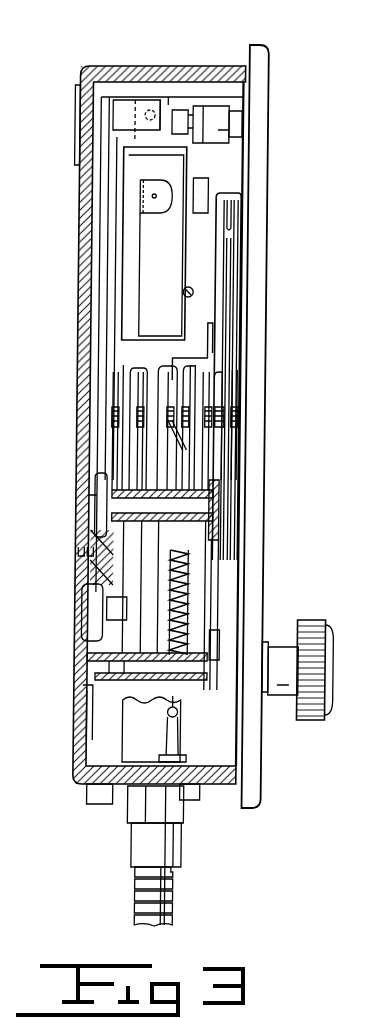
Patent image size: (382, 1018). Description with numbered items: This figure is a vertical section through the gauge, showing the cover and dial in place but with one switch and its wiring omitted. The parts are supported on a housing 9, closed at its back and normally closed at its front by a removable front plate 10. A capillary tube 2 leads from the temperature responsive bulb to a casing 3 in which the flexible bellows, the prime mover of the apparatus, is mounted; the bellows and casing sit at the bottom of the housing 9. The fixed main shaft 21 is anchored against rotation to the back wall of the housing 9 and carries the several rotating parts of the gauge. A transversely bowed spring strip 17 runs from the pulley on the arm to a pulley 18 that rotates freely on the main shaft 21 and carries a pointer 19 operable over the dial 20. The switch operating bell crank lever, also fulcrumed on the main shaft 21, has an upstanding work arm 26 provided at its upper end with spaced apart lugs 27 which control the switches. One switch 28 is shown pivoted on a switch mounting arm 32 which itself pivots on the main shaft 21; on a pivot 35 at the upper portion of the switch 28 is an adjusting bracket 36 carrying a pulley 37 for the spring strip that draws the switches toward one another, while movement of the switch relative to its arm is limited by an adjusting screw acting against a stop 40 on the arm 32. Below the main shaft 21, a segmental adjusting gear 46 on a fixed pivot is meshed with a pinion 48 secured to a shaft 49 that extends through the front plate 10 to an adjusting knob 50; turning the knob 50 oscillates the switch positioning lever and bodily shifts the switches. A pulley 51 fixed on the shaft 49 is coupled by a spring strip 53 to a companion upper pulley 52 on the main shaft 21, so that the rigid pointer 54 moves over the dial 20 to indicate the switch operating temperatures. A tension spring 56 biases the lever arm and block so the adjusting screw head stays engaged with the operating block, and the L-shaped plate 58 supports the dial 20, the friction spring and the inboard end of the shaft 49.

The capillary tube 2 is at (181, 884).
The casing 3 is at (151, 729).
The housing 9 is at (77, 225).
The front plate 10 is at (265, 72).
The spring strip 17 is at (207, 463).
The pulley 18 is at (220, 377).
The pointer 19 is at (236, 305).
The dial 20 is at (227, 224).
The main shaft 21 is at (98, 437).
The work arm 26 is at (158, 296).
The lugs 27 is at (147, 215).
The switch 28 is at (190, 285).
The switch mounting arm 32 is at (100, 250).
The pivot 35 is at (206, 178).
The adjusting bracket 36 is at (171, 97).
The pulley 37 is at (200, 104).
The stop 40 is at (122, 103).
The segmental adjusting gear 46 is at (108, 633).
The pinion 48 is at (110, 675).
The shaft 49 is at (244, 658).
The adjusting knob 50 is at (330, 713).
The pulley 51 is at (135, 690).
The upper pulley 52 is at (147, 370).
The spring strip 53 is at (157, 440).
The pointer 54 is at (232, 205).
The tension spring 56 is at (193, 627).
The L-shaped plate 58 is at (205, 690).